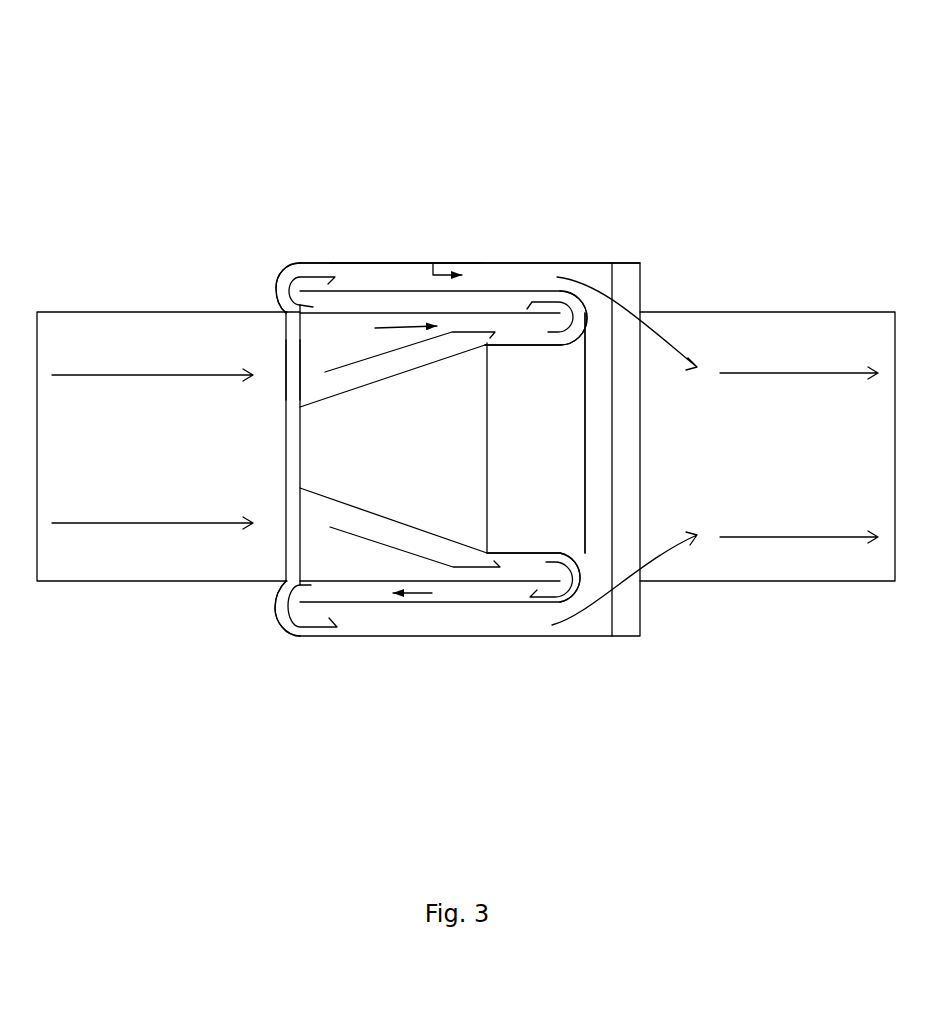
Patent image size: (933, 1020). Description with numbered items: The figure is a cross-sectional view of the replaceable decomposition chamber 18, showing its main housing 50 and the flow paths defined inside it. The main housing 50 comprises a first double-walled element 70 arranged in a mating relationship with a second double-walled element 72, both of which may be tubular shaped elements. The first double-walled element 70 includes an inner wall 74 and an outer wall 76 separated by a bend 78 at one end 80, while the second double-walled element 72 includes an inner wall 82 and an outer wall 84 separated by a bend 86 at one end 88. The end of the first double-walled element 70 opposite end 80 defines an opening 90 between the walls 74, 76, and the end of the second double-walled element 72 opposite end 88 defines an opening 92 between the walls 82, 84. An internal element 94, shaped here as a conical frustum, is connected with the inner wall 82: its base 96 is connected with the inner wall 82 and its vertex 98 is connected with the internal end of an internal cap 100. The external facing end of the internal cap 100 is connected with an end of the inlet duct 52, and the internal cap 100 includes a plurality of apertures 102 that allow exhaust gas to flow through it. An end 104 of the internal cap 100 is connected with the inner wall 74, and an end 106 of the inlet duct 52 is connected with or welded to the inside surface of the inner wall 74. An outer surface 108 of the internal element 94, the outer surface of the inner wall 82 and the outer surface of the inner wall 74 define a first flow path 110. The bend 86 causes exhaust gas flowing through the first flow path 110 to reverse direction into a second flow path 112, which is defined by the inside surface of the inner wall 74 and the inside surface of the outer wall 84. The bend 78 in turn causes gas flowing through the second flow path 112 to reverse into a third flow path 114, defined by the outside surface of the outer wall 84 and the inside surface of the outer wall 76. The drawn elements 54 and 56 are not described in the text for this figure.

The decomposition chamber 18 is at (470, 160).
The main housing 50 is at (405, 213).
The inlet duct 52 is at (160, 421).
The second strap 54 is at (767, 402).
The end wall 56 is at (671, 443).
The first double-walled element 70 is at (493, 518).
The second double-walled element 72 is at (643, 433).
The inner wall 74 is at (416, 444).
The outer wall 76 is at (244, 393).
The bend 78 is at (202, 416).
The end 80 is at (242, 415).
The inner wall 82 is at (532, 449).
The outer wall 84 is at (487, 470).
The bend 86 is at (643, 446).
The end 88 is at (645, 446).
The opening 90 is at (612, 384).
The opening 92 is at (410, 374).
The internal element 94 is at (393, 513).
The base 96 is at (534, 448).
The vertex 98 is at (353, 445).
The internal cap 100 is at (202, 446).
The apertures 102 is at (233, 367).
The end 104 is at (195, 271).
The end 106 is at (311, 512).
The outer surface 108 is at (392, 394).
The first flow path 110 is at (380, 329).
The second flow path 112 is at (459, 661).
The third flow path 114 is at (412, 203).